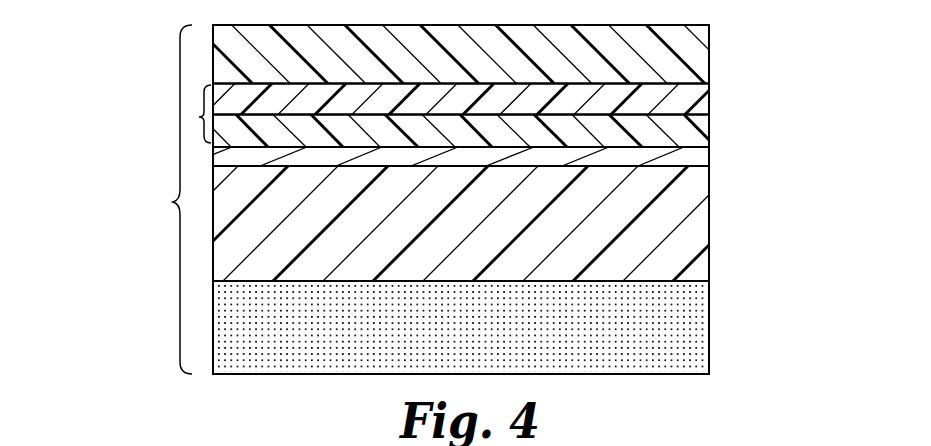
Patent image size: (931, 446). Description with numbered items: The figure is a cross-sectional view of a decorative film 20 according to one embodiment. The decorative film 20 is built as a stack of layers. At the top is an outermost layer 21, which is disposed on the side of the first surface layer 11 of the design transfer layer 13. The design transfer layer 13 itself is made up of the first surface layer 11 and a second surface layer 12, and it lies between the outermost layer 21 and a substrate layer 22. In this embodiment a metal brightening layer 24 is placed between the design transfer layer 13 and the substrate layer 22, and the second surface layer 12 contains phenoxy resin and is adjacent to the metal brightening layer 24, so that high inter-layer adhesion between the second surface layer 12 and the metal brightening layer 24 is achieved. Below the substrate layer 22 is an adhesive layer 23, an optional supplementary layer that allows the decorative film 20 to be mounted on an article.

The decorative film 20 is at (173, 202).
The design transfer layer 13 is at (200, 117).
The outermost layer 21 is at (698, 60).
The first surface layer 11 is at (697, 108).
The second surface layer 12 is at (693, 135).
The metal brightening layer 24 is at (697, 157).
The substrate layer 22 is at (694, 233).
The adhesive layer 23 is at (694, 310).